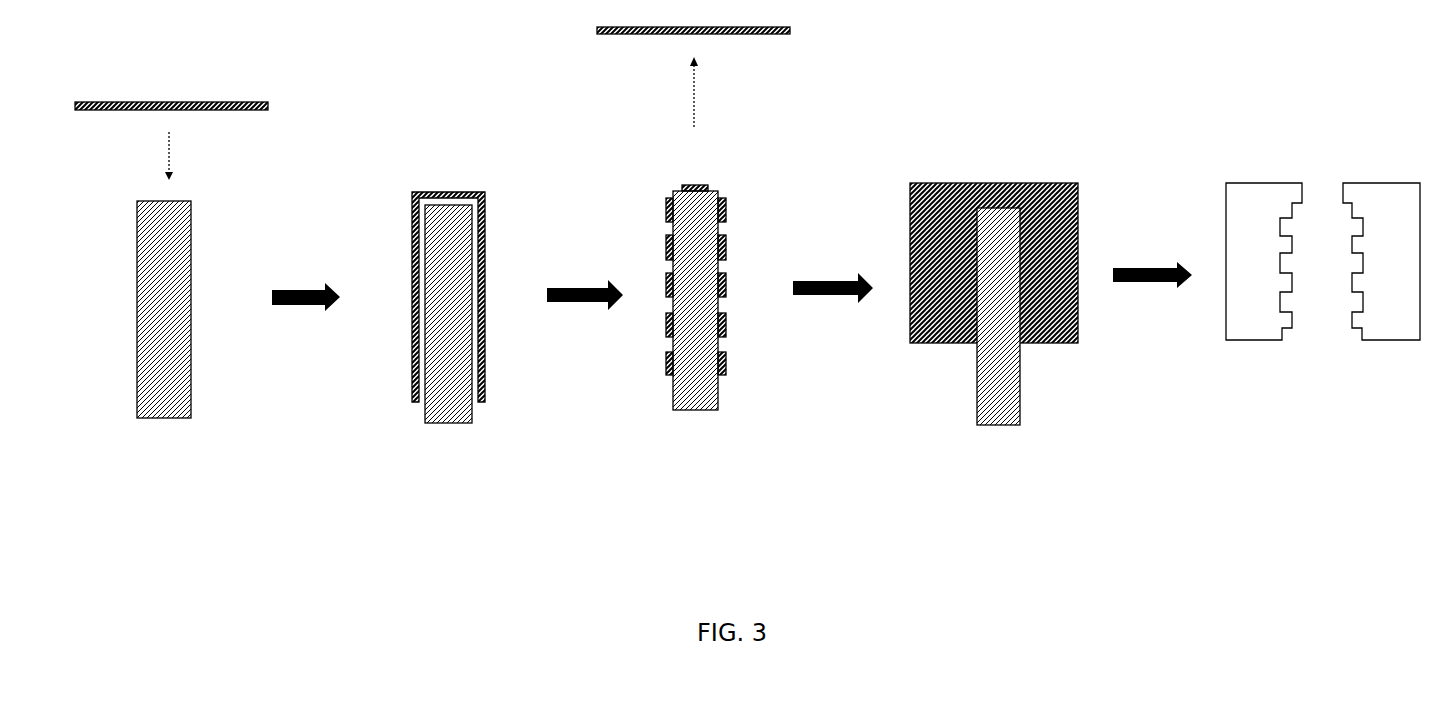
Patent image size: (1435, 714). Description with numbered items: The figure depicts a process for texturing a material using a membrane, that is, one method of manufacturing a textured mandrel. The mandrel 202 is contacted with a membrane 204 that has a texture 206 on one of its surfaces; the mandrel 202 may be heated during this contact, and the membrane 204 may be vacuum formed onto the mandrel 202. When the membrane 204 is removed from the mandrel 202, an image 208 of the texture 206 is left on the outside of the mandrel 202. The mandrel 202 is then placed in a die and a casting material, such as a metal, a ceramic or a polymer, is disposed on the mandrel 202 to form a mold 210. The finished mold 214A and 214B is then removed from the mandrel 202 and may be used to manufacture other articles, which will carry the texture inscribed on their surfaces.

The mandrel 202 is at (192, 378).
The membrane 204 is at (270, 105).
The texture 206 is at (93, 111).
The image of the texture 208 is at (727, 208).
The mold 210 is at (909, 332).
The mold 214A is at (1262, 183).
The mold 214B is at (1381, 183).